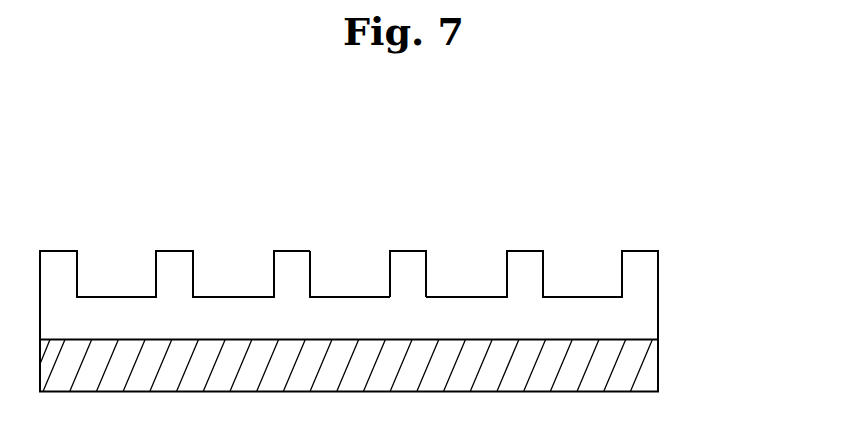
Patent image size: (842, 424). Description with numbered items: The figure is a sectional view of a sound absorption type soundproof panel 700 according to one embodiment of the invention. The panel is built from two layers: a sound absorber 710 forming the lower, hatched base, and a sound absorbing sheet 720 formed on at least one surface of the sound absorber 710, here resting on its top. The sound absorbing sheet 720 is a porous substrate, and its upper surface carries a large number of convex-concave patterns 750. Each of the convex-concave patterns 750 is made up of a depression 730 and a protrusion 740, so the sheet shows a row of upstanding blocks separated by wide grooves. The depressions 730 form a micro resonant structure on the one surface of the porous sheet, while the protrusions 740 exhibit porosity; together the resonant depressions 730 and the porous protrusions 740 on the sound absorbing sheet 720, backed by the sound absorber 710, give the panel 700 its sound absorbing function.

The sound absorption type soundproof panel 700 is at (106, 124).
The sound absorber 710 is at (647, 366).
The sound absorbing sheet 720 is at (647, 310).
The depressions 730 is at (357, 276).
The protrusions 740 is at (405, 263).
The convex-concave patterns 750 is at (412, 181).